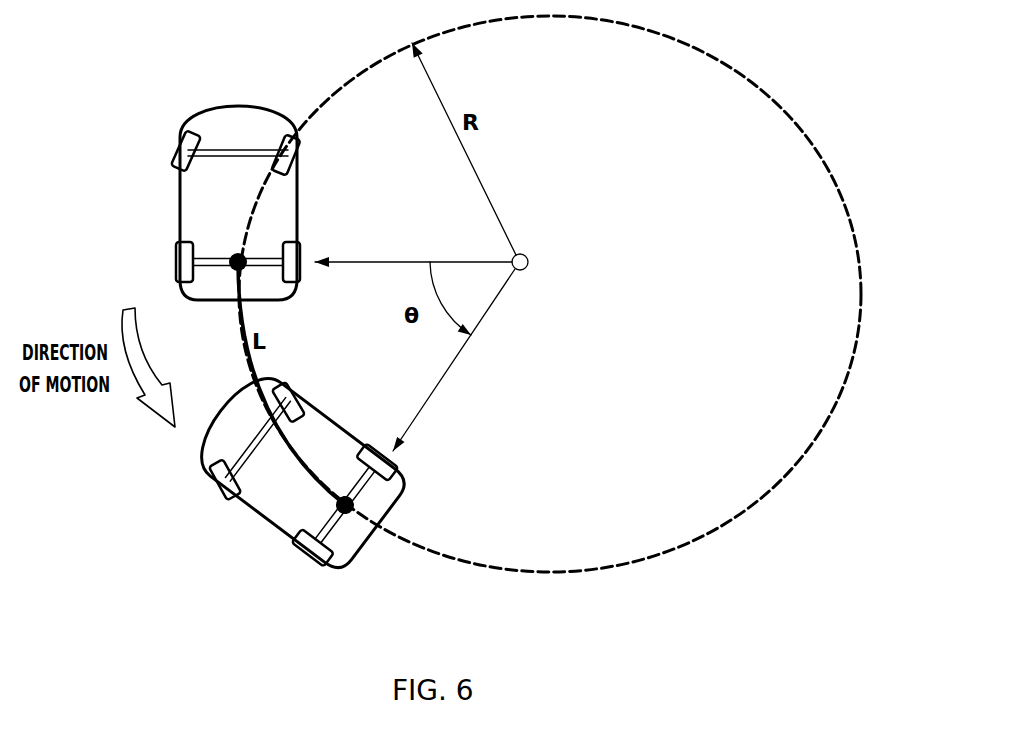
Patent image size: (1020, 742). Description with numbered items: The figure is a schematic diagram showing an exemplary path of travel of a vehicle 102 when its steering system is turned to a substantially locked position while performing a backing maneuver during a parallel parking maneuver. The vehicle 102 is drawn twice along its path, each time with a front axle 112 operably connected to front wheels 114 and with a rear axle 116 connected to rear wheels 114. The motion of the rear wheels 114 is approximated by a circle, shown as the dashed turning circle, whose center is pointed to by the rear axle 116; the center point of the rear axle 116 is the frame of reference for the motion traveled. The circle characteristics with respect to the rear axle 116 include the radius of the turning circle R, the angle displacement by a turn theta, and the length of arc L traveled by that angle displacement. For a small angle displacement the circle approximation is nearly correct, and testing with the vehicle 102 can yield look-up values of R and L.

The vehicle 102 is at (176, 193).
The front axle 112 is at (222, 150).
The wheels 114 is at (178, 150).
The rear axle 116 is at (216, 270).